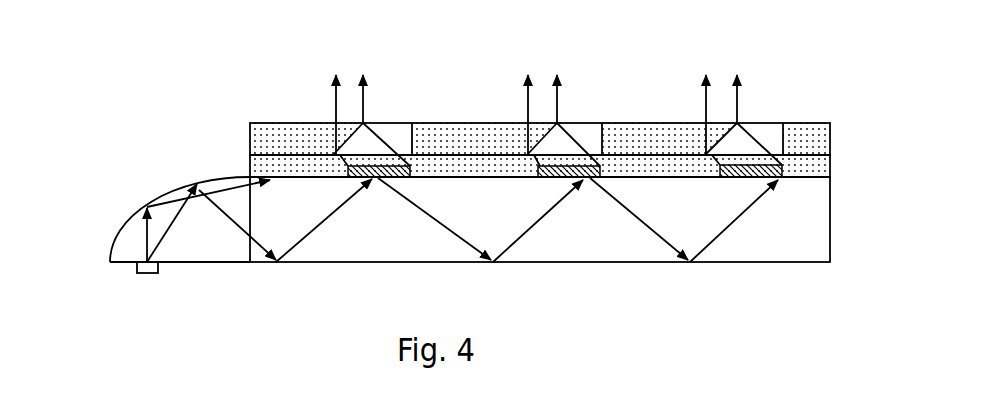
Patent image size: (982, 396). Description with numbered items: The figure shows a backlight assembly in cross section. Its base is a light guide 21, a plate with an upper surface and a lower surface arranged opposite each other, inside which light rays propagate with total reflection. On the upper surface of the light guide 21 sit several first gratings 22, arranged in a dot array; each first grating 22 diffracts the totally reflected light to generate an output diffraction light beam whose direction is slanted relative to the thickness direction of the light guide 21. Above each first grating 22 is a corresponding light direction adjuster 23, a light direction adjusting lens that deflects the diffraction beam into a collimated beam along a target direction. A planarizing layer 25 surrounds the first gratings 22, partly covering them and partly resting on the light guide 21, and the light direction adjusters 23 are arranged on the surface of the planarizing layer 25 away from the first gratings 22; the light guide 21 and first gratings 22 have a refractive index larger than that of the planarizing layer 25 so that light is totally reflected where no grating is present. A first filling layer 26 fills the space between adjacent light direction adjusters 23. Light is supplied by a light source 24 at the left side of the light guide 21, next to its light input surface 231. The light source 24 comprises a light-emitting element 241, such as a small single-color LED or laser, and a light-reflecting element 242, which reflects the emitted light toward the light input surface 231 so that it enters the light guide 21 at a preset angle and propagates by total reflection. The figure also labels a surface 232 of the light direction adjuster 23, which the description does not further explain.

The light guide 21 is at (830, 248).
The first grating 22 is at (830, 167).
The light direction adjuster 23 is at (736, 115).
The light input surface 231 is at (733, 152).
The second inclined surface 232 is at (720, 135).
The light source 24 is at (146, 258).
The light-emitting element 241 is at (137, 290).
The light-reflecting element 242 is at (112, 247).
The planarizing layer 25 is at (287, 163).
The first filling layer 26 is at (292, 130).